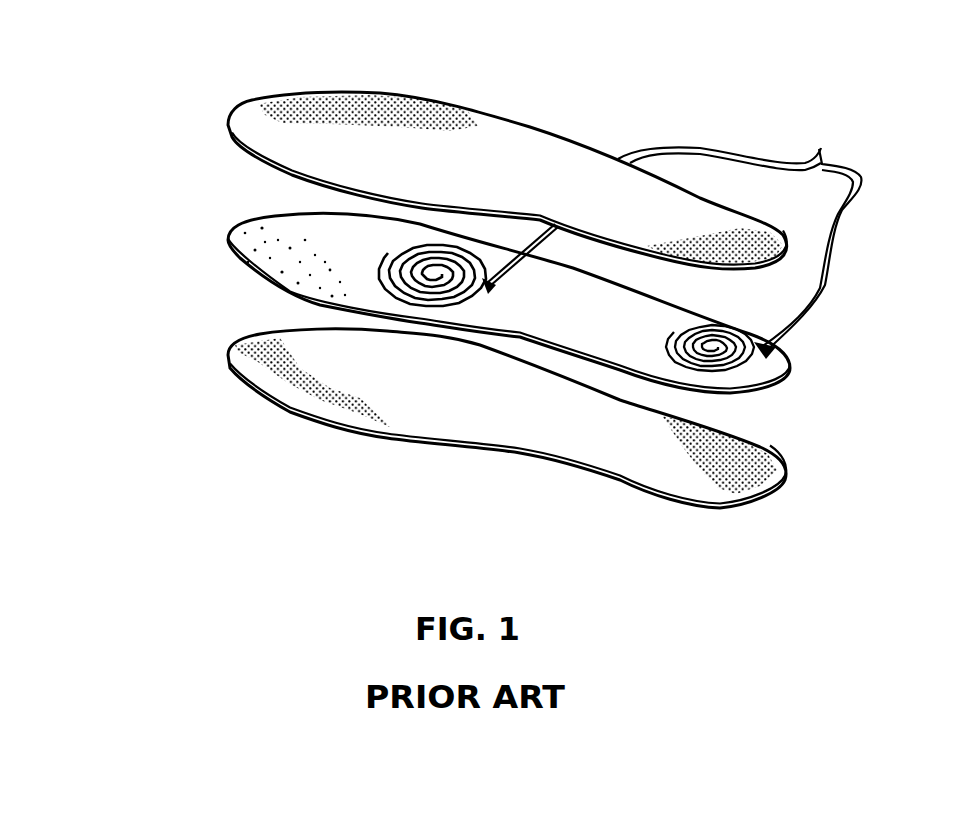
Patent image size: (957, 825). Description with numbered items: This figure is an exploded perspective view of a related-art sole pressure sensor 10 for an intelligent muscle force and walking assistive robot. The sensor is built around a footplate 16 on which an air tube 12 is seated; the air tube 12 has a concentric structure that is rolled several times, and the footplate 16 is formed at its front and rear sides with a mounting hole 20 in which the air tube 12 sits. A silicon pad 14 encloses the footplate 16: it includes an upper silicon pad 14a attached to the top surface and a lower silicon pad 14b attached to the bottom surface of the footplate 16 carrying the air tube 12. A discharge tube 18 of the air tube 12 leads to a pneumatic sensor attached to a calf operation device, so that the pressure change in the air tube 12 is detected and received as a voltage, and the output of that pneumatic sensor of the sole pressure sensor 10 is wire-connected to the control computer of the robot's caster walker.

The sole pressure sensor 10 is at (553, 63).
The air tube 12 is at (493, 290).
The silicon pad 14 is at (410, 300).
The upper silicon pad 14a is at (268, 150).
The lower silicon pad 14b is at (262, 352).
The footplate 16 is at (630, 343).
The discharge tube 18 is at (752, 158).
The mounting hole 20 is at (382, 282).